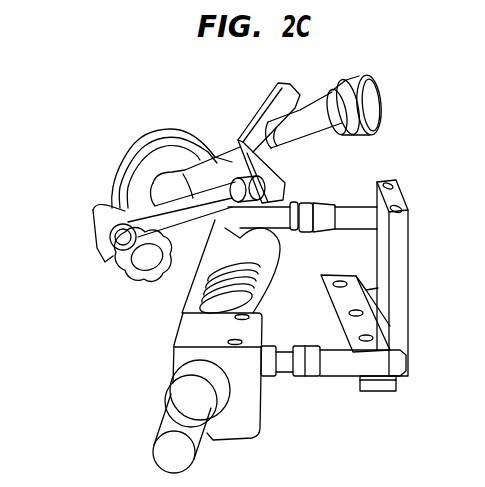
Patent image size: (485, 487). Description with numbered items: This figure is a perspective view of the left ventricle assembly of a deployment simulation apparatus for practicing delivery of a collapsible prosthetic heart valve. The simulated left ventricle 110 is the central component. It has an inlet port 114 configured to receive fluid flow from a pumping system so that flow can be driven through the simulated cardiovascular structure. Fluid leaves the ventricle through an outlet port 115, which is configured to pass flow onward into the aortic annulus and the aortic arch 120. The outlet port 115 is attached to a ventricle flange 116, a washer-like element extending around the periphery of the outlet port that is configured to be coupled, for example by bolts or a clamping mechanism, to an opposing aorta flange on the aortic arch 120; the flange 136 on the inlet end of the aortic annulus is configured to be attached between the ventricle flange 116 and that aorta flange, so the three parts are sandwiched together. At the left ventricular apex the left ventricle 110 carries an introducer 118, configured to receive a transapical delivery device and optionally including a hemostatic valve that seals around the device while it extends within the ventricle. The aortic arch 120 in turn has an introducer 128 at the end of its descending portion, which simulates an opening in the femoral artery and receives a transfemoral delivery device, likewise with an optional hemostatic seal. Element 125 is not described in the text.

The left ventricle 110 is at (190, 246).
The inlet port 114 is at (203, 228).
The outlet port 115 is at (162, 200).
The ventricle flange 116 is at (114, 184).
The introducer 118 is at (374, 101).
The aortic arch 120 is at (293, 256).
The connector tube 125 is at (271, 372).
The introducer 128 is at (172, 421).
The flange 136 is at (120, 193).